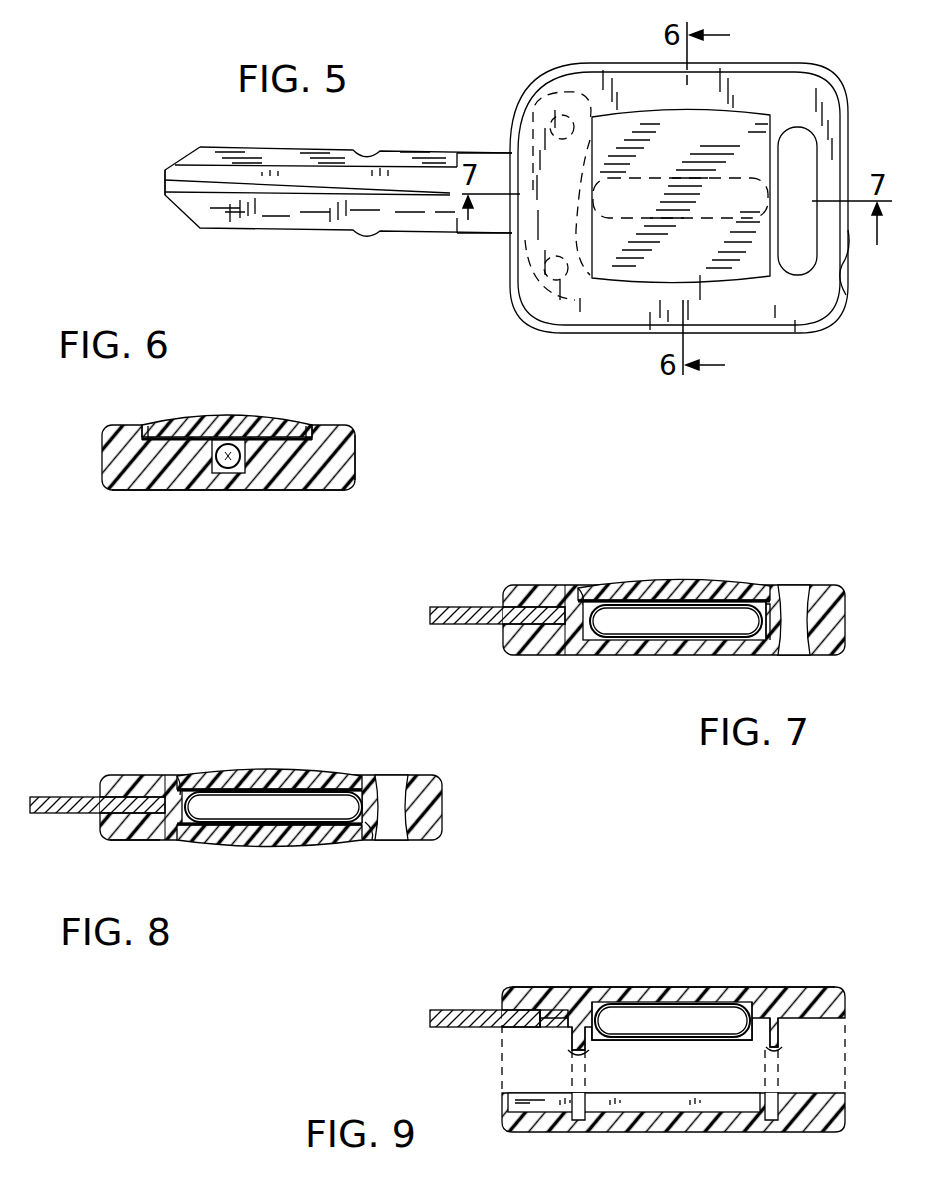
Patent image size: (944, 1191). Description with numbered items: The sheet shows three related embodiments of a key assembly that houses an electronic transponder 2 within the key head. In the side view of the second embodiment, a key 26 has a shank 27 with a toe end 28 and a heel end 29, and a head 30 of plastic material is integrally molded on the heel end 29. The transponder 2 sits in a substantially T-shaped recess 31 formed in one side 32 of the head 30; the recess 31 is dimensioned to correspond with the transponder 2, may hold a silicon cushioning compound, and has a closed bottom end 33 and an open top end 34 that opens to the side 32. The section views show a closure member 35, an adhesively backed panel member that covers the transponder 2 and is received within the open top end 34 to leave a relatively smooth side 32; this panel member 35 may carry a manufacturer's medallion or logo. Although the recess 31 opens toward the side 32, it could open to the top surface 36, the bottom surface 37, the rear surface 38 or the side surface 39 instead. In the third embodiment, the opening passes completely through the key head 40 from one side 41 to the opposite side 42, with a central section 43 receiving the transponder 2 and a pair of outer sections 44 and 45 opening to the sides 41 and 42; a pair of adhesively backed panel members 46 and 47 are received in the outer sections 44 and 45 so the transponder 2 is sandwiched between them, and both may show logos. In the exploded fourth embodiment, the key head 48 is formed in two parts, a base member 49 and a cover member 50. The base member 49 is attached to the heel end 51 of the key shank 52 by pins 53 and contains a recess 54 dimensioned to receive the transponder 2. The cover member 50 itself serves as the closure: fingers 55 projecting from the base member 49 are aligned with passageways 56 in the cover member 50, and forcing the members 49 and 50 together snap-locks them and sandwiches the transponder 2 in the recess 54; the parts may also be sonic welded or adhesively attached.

In FIG. 6, the transponder 2 is at (229, 468).
In FIG. 7, the transponder 2 is at (700, 622).
In FIG. 8, the transponder 2 is at (287, 810).
In FIG. 9, the transponder 2 is at (678, 1012).
In FIG. 5, the key 26 is at (503, 125).
In FIG. 5, the shank 27 is at (312, 232).
In FIG. 5, the toe end 28 is at (168, 192).
In FIG. 5, the heel end 29 is at (514, 225).
In FIG. 5, the head 30 is at (752, 303).
In FIG. 6, the T-shaped recess 31 is at (232, 437).
In FIG. 7, the T-shaped recess 31 is at (738, 604).
In FIG. 6, the side 32 is at (318, 428).
In FIG. 7, the side 32 is at (540, 585).
In FIG. 6, the closed bottom end 33 is at (223, 470).
In FIG. 7, the closed bottom end 33 is at (628, 625).
In FIG. 6, the open top end 34 is at (152, 425).
In FIG. 7, the open top end 34 is at (590, 590).
In FIG. 5, the closure member 35 is at (612, 268).
In FIG. 6, the closure member 35 is at (258, 425).
In FIG. 7, the closure member 35 is at (680, 585).
In FIG. 6, the top surface 36 is at (103, 455).
In FIG. 6, the bottom surface 37 is at (356, 455).
In FIG. 5, the rear surface 38 is at (842, 290).
In FIG. 7, the rear surface 38 is at (838, 612).
In FIG. 6, the side surface 39 is at (300, 492).
In FIG. 7, the side surface 39 is at (540, 655).
In FIG. 8, the key head 40 is at (107, 771).
In FIG. 8, the side 41 is at (132, 773).
In FIG. 8, the opposite side 42 is at (148, 840).
In FIG. 8, the central section 43 is at (338, 776).
In FIG. 8, the outer section 44 is at (185, 788).
In FIG. 8, the outer section 45 is at (352, 843).
In FIG. 8, the panel member 46 is at (270, 770).
In FIG. 8, the panel member 47 is at (252, 845).
In FIG. 9, the key head 48 is at (503, 993).
In FIG. 9, the base member 49 is at (600, 987).
In FIG. 9, the cover member 50 is at (672, 1132).
In FIG. 9, the heel end 51 is at (550, 1010).
In FIG. 9, the key shank 52 is at (450, 1027).
In FIG. 9, the pins 53 is at (545, 1027).
In FIG. 9, the recess 54 is at (730, 1005).
In FIG. 9, the fingers 55 is at (578, 1043).
In FIG. 9, the passageways 56 is at (575, 1132).